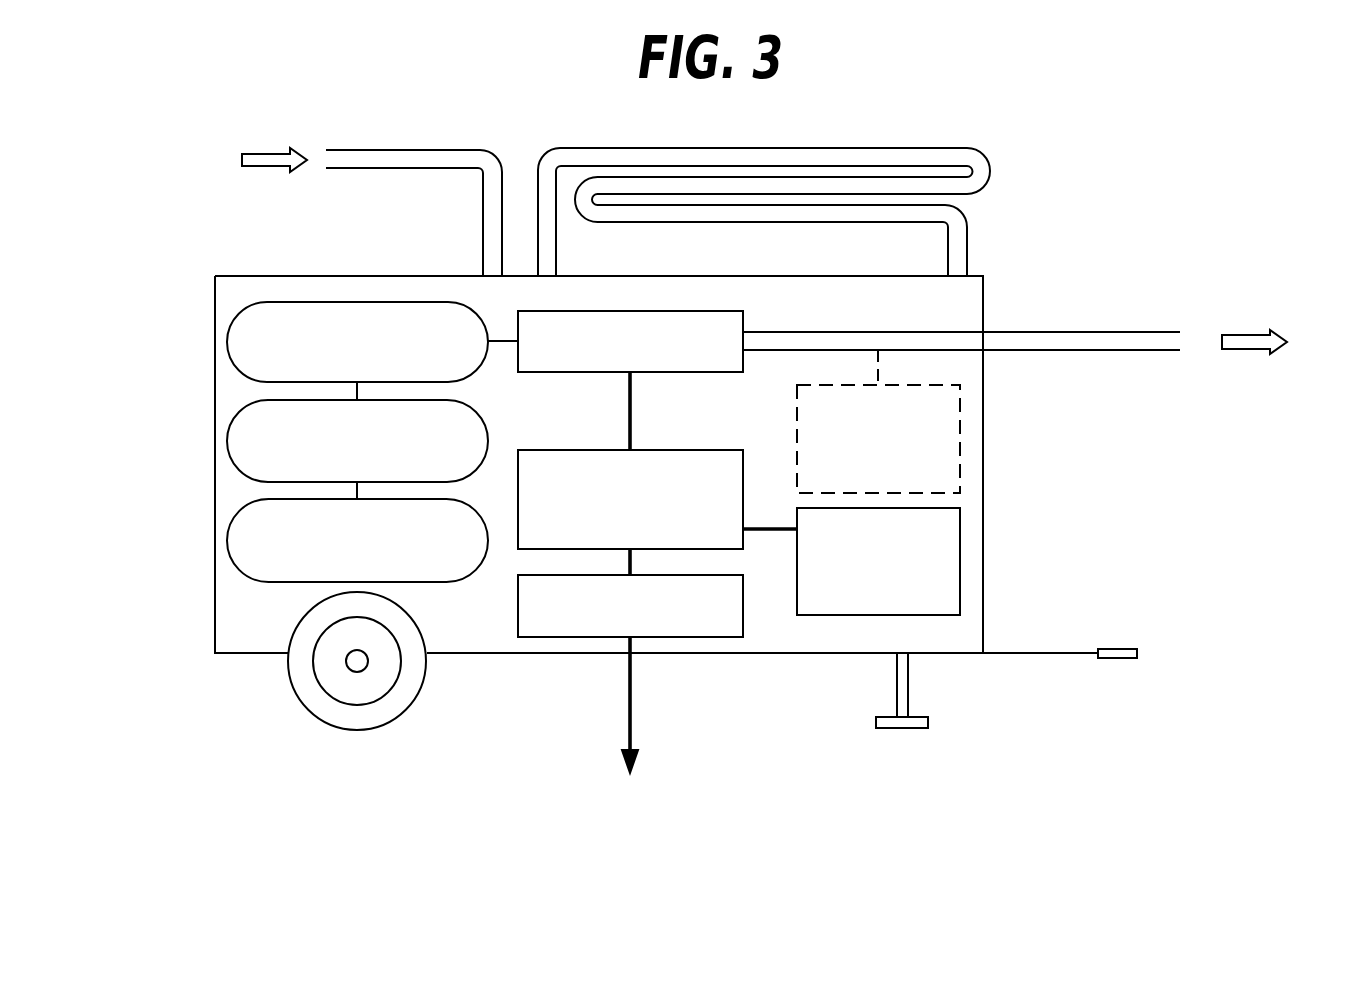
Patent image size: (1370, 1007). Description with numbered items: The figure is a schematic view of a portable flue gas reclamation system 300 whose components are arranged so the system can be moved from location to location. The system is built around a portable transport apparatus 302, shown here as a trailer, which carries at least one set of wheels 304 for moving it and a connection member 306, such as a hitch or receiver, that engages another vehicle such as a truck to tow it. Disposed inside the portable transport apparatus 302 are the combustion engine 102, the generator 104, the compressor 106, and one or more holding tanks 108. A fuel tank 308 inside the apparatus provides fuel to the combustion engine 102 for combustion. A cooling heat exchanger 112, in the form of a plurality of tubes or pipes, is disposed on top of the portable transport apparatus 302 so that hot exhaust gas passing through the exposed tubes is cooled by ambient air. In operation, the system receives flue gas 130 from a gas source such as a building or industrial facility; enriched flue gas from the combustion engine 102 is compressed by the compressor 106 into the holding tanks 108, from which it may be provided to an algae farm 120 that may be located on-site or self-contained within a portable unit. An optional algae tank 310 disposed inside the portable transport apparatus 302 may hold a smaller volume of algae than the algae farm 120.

The portable flue gas reclamation system 300 is at (1036, 175).
The portable transport apparatus 302 is at (860, 276).
The flue gas 130 is at (278, 96).
The cooling heat exchanger 112 is at (832, 148).
The holding tanks 108 is at (227, 342).
The compressor 106 is at (672, 311).
The combustion engine 102 is at (683, 450).
The generator 104 is at (518, 612).
The algae tank 310 is at (960, 415).
The fuel tank 308 is at (960, 556).
The algae farm 120 is at (1253, 280).
The wheels 304 is at (294, 691).
The connection member 306 is at (1117, 649).